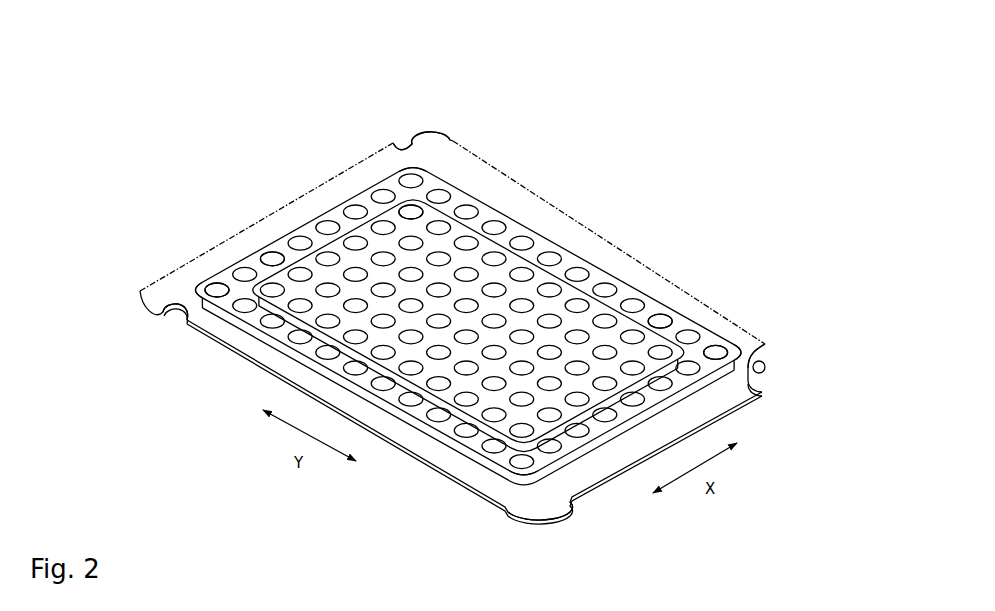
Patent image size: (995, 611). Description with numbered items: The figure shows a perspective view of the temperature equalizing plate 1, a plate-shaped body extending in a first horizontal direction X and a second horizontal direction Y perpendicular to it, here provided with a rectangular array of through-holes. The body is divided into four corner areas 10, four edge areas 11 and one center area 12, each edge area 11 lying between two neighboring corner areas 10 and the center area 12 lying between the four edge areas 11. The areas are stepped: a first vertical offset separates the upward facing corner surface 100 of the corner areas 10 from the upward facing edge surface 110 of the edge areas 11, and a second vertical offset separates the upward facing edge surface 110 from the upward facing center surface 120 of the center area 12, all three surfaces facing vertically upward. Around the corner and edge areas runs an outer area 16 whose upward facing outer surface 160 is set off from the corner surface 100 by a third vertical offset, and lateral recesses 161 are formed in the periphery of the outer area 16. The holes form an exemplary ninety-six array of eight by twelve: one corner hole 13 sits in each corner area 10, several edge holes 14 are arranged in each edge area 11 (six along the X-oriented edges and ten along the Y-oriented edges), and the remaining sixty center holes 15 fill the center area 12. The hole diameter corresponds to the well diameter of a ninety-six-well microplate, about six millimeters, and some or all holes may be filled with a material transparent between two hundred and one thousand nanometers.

The temperature equalizing plate 1 is at (707, 147).
The corner areas 10 is at (183, 217).
The upward facing corner surface 100 is at (202, 290).
The edge areas 11 is at (283, 178).
The upward facing edge surface 110 is at (360, 192).
The center area 12 is at (483, 97).
The upward facing center surface 120 is at (499, 270).
The corner hole 13 is at (412, 178).
The edge holes 14 is at (273, 254).
The center holes 15 is at (414, 206).
The outer area 16 is at (195, 380).
The upward facing outer surface 160 is at (764, 360).
The lateral recesses 161 is at (173, 318).